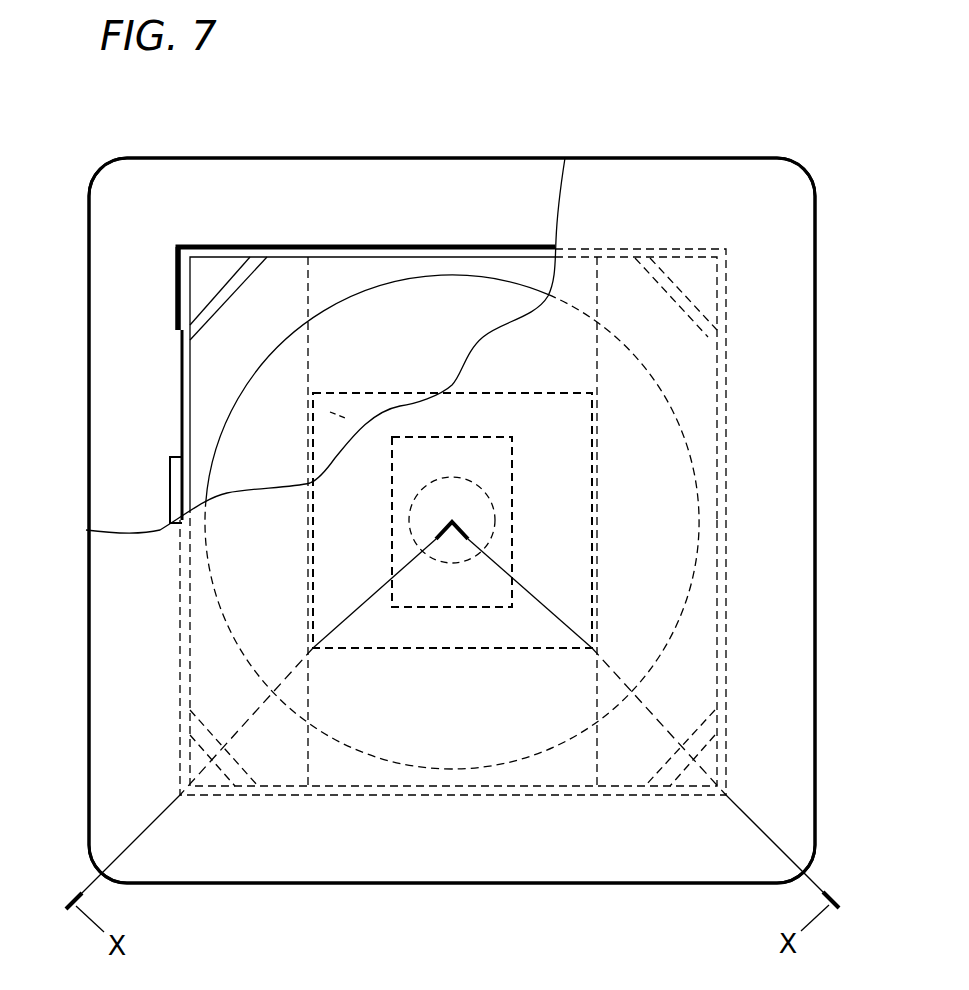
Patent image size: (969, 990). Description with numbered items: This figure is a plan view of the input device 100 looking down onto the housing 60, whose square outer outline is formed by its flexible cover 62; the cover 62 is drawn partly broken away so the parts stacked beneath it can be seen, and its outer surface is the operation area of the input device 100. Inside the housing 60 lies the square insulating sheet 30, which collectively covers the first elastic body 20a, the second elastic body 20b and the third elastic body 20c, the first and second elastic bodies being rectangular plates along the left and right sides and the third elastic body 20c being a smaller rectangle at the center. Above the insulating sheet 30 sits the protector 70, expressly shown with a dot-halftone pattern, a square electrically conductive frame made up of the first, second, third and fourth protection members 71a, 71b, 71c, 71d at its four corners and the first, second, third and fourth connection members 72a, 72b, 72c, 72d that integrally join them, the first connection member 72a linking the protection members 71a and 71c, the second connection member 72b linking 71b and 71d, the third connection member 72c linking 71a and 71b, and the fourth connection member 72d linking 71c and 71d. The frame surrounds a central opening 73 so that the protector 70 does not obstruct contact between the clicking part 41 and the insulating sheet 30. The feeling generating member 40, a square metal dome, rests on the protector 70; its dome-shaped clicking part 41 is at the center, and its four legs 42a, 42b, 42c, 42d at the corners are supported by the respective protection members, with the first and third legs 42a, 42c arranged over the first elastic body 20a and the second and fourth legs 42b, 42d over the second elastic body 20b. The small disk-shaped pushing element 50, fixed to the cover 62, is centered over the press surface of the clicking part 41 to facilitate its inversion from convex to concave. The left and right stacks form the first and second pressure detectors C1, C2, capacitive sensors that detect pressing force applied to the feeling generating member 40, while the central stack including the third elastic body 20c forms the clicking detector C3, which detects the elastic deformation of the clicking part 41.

The input device 100 is at (305, 138).
The housing 60 is at (797, 298).
The cover 62 is at (634, 170).
The insulating sheet 30 is at (292, 246).
The protector 70 is at (177, 270).
The feeling generating member 40 is at (420, 270).
The clicking part 41 is at (490, 287).
The first protection member 71a is at (186, 757).
The second protection member 71b is at (690, 690).
The third protection member 71c is at (188, 300).
The fourth protection member 71d is at (697, 285).
The first connection member 72a is at (176, 490).
The second connection member 72b is at (685, 495).
The third connection member 72c is at (508, 760).
The fourth connection member 72d is at (367, 310).
The opening 73 is at (330, 412).
The first elastic body 20a is at (197, 422).
The second elastic body 20b is at (698, 418).
The third elastic body 20c is at (510, 452).
The first leg 42a is at (226, 793).
The second leg 42b is at (680, 793).
The third leg 42c is at (222, 270).
The fourth leg 42d is at (682, 262).
The pushing element 50 is at (487, 513).
The first pressure detector C1 is at (195, 566).
The second pressure detector C2 is at (716, 545).
The clicking detector C3 is at (475, 587).